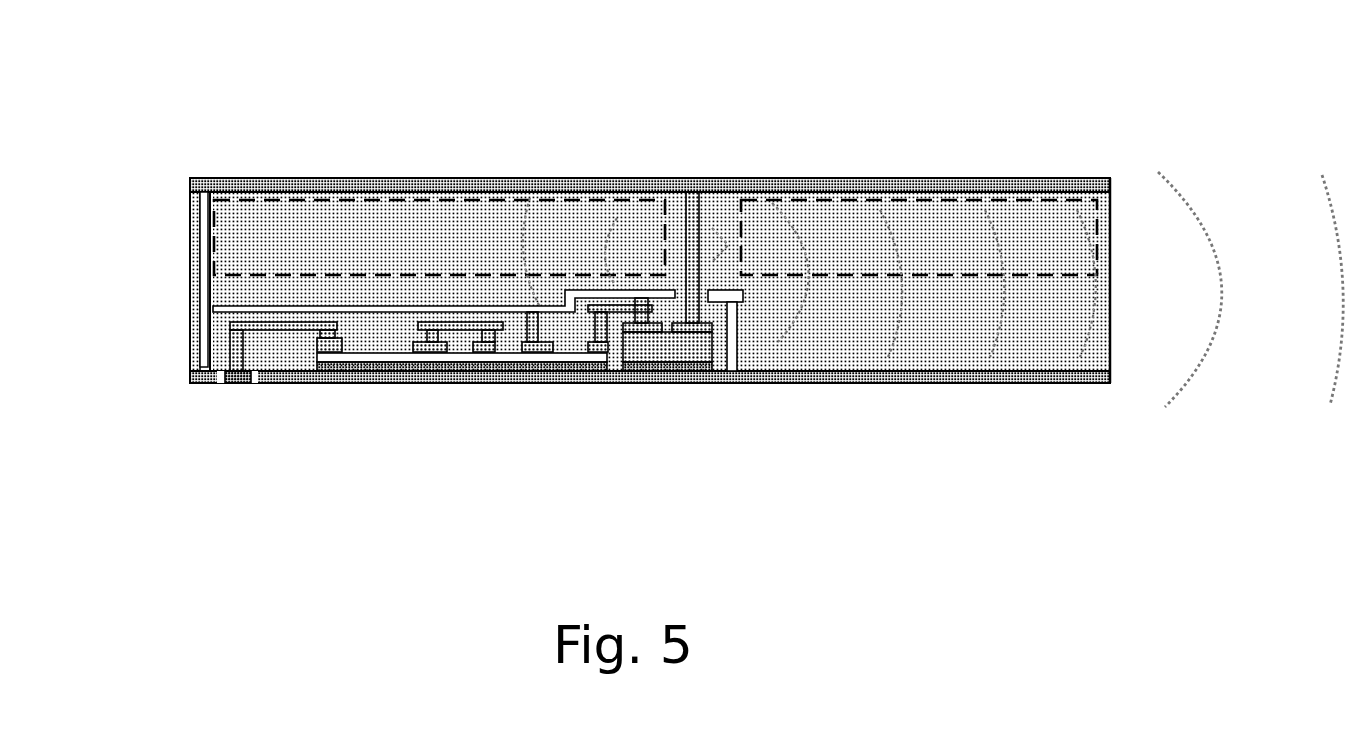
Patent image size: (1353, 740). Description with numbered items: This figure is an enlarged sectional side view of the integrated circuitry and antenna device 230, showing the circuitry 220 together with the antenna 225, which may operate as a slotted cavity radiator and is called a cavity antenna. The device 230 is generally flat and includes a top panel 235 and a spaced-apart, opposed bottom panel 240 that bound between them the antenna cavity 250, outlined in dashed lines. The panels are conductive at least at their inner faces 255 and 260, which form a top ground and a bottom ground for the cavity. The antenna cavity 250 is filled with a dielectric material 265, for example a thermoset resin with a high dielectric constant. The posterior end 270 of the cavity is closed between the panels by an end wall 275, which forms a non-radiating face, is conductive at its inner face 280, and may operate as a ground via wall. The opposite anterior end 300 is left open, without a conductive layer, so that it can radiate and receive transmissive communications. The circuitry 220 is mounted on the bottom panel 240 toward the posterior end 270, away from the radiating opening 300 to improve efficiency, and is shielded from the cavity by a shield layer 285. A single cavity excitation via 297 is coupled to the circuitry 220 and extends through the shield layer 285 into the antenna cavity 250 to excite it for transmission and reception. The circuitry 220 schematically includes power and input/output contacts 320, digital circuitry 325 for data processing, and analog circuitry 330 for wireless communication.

The circuitry 220 is at (562, 399).
The antenna 225 is at (953, 362).
The integrated circuitry and antenna device 230 is at (196, 72).
The top panel 235 is at (1006, 182).
The bottom panel 240 is at (745, 384).
The antenna cavity 250 is at (292, 196).
The inner face of top panel 255 is at (493, 196).
The inner face of bottom panel 260 is at (308, 371).
The dielectric material 265 is at (662, 258).
The posterior end 270 is at (194, 162).
The end wall 275 is at (197, 223).
The inner face of end wall 280 is at (214, 203).
The shield layer 285 is at (230, 298).
The cavity excitation via 297 is at (680, 210).
The anterior opening 300 is at (1112, 210).
The power and/or input/output contacts 320 is at (233, 404).
The digital circuitry 325 is at (546, 370).
The analog circuitry 330 is at (668, 345).